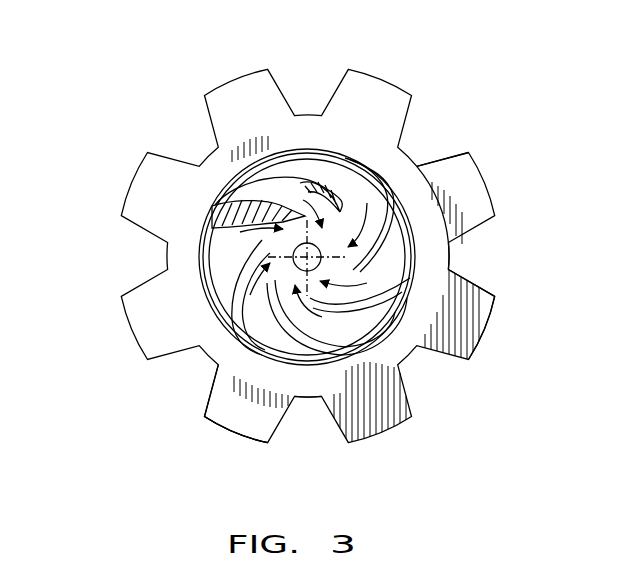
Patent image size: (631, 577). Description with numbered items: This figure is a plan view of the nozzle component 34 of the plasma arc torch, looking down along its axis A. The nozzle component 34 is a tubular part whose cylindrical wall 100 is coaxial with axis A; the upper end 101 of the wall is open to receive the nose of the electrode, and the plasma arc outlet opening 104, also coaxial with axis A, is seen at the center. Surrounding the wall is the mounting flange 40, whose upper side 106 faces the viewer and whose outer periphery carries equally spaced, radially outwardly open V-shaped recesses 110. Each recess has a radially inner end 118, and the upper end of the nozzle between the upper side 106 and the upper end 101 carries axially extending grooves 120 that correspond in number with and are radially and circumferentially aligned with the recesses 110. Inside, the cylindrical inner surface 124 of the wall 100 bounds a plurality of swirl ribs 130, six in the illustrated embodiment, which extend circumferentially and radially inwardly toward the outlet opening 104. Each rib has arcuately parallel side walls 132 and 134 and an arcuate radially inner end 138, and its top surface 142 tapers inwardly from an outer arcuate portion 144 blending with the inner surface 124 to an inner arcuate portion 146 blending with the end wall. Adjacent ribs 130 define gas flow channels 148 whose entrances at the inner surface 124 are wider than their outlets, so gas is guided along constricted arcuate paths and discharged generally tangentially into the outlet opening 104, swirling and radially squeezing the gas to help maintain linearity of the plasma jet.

The nozzle component 34 is at (112, 93).
The mounting flange 40 is at (488, 329).
The cylindrical wall 100 is at (193, 290).
The upper end 101 is at (422, 213).
The plasma arc outlet opening 104 is at (177, 372).
The upper side 106 is at (244, 410).
The V-shaped recesses 110 is at (488, 257).
The radially inner end 118 is at (303, 393).
The axially extending grooves 120 is at (213, 151).
The cylindrical inner surface 124 is at (392, 308).
The swirl ribs 130 is at (318, 175).
The side wall 132 is at (253, 205).
The side wall 134 is at (232, 243).
The radially inner end 138 is at (243, 260).
The top surface 142 is at (311, 188).
The arcuate portion 144 is at (353, 343).
The arcuate portion 146 is at (283, 217).
The gas flow channels 148 is at (268, 187).
The axis A is at (166, 383).